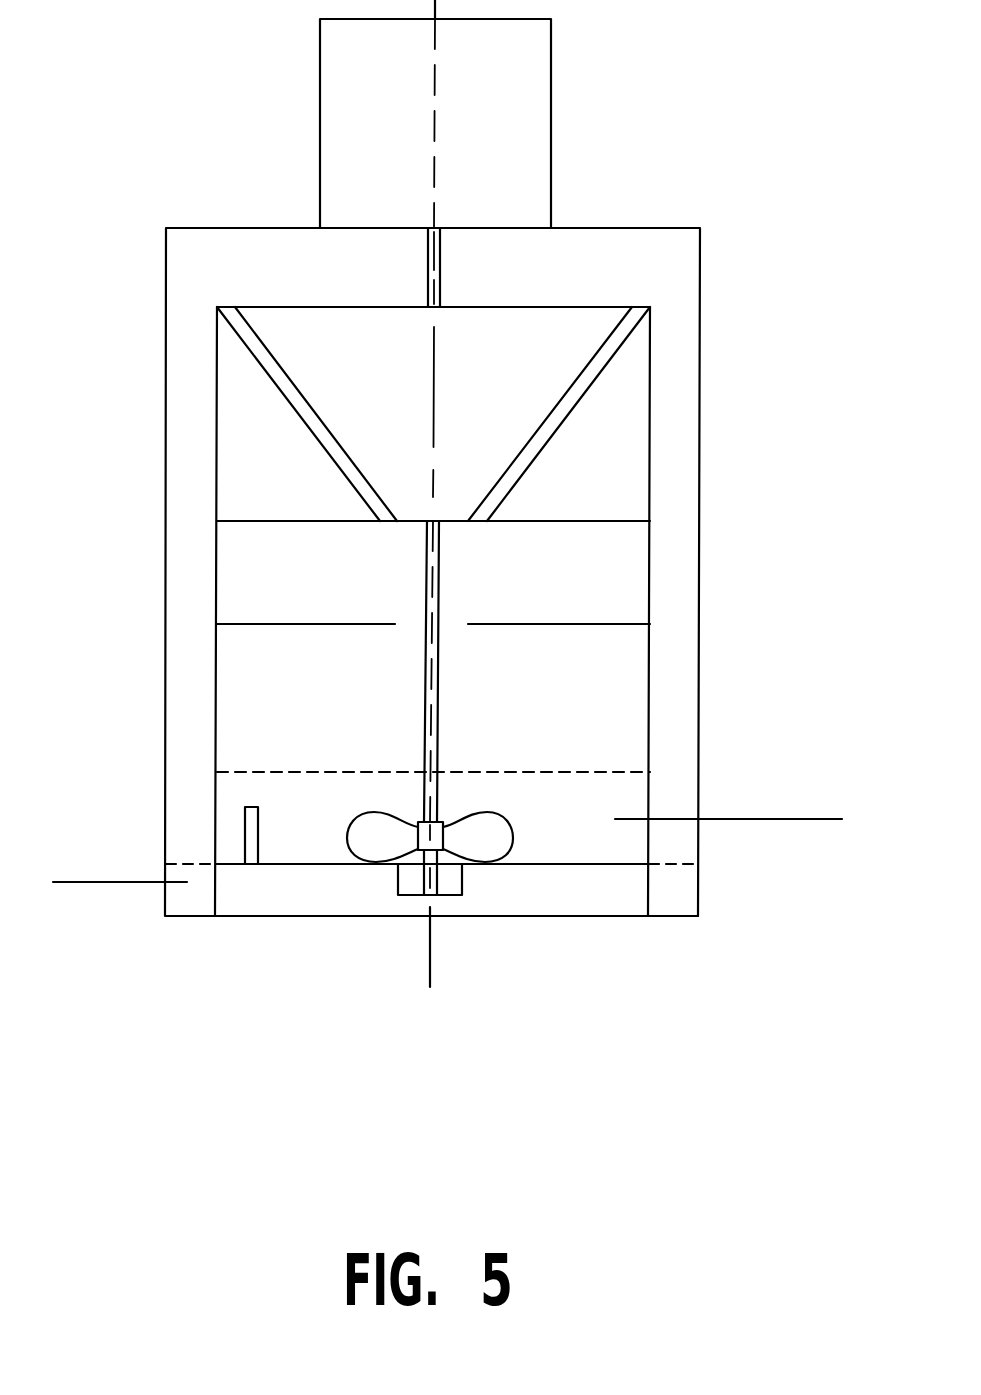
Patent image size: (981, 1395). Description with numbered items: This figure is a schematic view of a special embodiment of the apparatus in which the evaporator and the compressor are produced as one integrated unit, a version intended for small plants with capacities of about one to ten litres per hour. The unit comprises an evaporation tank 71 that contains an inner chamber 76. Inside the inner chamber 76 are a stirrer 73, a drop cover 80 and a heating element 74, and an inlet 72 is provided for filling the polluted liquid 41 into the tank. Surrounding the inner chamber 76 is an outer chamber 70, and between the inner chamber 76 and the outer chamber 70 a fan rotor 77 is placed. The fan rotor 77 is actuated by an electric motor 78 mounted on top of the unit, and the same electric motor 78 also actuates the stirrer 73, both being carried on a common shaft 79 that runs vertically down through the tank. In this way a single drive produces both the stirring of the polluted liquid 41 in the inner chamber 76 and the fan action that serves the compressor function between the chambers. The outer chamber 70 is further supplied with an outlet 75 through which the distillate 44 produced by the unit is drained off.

The polluted liquid 41 is at (582, 833).
The distillate 44 is at (187, 897).
The outer chamber 70 is at (673, 454).
The evaporation tank 71 is at (580, 708).
The inlet 72 is at (740, 819).
The stirrer 73 is at (478, 837).
The heating element 74 is at (252, 835).
The outlet 75 is at (112, 883).
The inner chamber 76 is at (240, 675).
The fan rotor 77 is at (340, 368).
The electric motor 78 is at (517, 127).
The common shaft 79 is at (442, 266).
The drop cover 80 is at (523, 624).